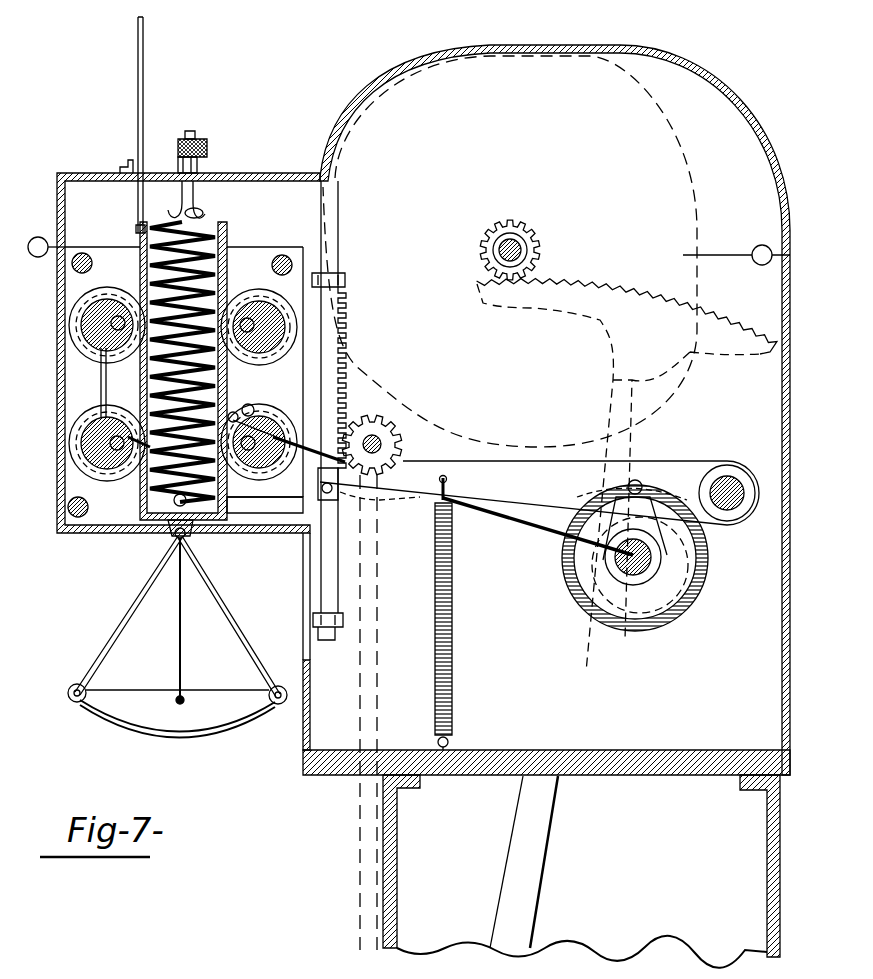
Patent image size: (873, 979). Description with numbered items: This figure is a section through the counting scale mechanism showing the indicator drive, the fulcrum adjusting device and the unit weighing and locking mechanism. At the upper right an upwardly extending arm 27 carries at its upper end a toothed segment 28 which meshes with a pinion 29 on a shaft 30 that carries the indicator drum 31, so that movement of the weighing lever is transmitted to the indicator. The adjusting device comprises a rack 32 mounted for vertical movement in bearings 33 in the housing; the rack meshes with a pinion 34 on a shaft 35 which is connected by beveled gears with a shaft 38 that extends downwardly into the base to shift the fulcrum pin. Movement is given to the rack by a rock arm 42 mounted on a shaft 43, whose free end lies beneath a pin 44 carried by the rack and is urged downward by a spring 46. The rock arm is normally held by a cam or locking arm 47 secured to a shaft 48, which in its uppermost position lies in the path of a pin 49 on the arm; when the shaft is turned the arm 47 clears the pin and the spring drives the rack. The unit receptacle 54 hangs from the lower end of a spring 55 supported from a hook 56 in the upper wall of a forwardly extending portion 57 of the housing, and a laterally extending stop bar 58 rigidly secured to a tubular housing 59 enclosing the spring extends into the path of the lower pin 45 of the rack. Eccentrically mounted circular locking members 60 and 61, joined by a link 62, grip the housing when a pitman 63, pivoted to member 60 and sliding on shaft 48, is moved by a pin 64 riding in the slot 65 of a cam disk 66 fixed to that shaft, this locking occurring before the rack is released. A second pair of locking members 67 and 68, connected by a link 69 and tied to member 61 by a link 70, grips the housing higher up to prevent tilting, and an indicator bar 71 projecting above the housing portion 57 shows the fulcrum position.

The upwardly extending arm 27 is at (543, 807).
The toothed segment 28 is at (618, 286).
The pinion 29 is at (536, 240).
The shaft 30 is at (508, 247).
The indicator drum 31 is at (684, 174).
The rack 32 is at (350, 363).
The bearings 33 is at (346, 279).
The pinion 34 is at (400, 418).
The shaft 35 is at (383, 441).
The shaft 38 is at (358, 712).
The rock arm 42 is at (539, 493).
The shaft 43 is at (727, 476).
The pin 44 is at (372, 500).
The lower pin 45 is at (338, 500).
The spring 46 is at (457, 602).
The locking arm 47 is at (647, 496).
The shaft 48 is at (638, 560).
The pin 49 is at (637, 480).
The unit receptacle 54 is at (215, 726).
The spring 55 is at (158, 518).
The hook 56 is at (205, 154).
The forwardly extending portion 57 is at (297, 178).
The stop bar 58 is at (267, 513).
The tubular housing 59 is at (228, 228).
The locking member 60 is at (257, 427).
The locking member 61 is at (86, 449).
The link 62 is at (230, 405).
The pitman 63 is at (489, 503).
The pin 64 is at (693, 581).
The slot 65 is at (664, 614).
The cam disk 66 is at (603, 630).
The locking member 67 is at (300, 290).
The locking member 68 is at (103, 318).
The link 69 is at (228, 288).
The link 70 is at (88, 380).
The indicator bar 71 is at (134, 140).